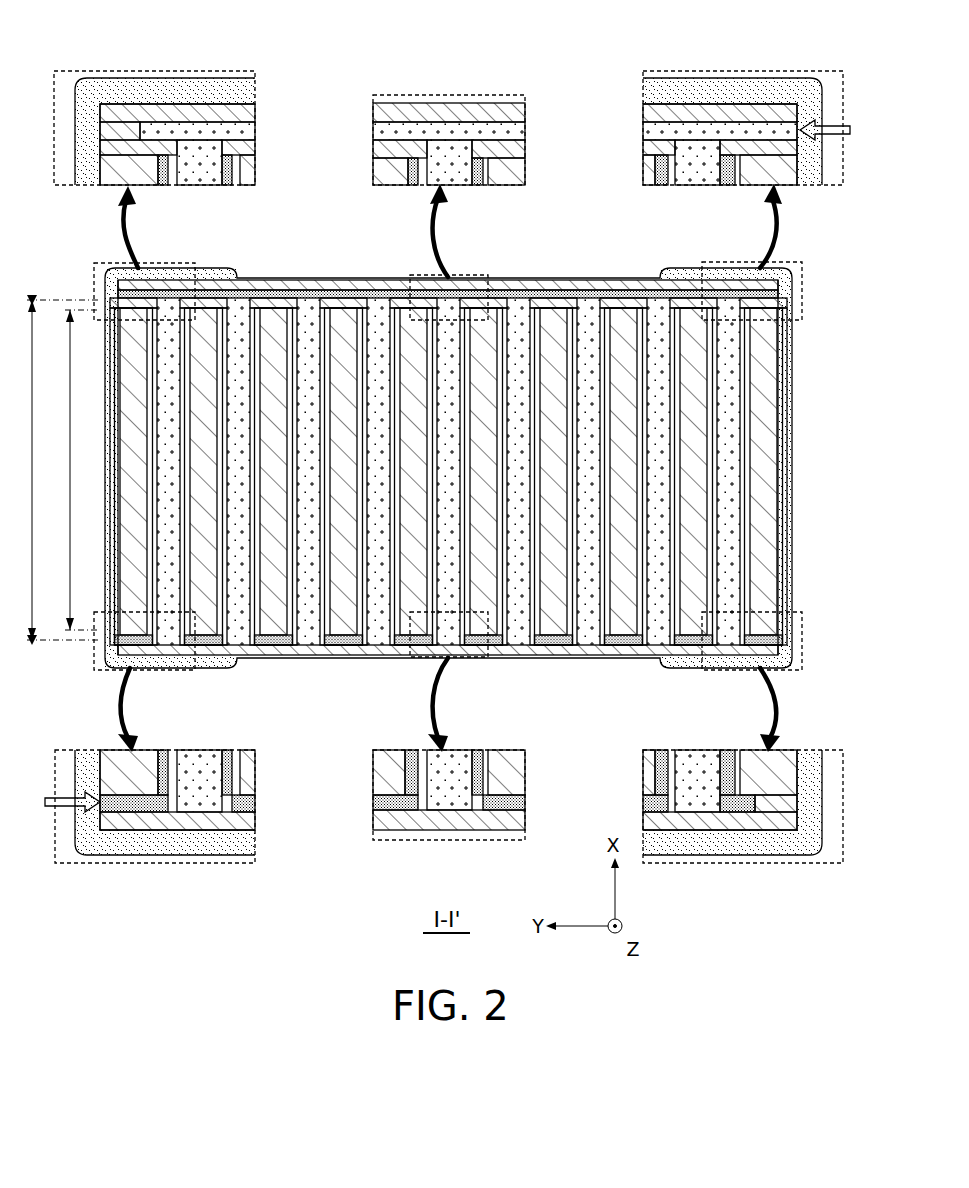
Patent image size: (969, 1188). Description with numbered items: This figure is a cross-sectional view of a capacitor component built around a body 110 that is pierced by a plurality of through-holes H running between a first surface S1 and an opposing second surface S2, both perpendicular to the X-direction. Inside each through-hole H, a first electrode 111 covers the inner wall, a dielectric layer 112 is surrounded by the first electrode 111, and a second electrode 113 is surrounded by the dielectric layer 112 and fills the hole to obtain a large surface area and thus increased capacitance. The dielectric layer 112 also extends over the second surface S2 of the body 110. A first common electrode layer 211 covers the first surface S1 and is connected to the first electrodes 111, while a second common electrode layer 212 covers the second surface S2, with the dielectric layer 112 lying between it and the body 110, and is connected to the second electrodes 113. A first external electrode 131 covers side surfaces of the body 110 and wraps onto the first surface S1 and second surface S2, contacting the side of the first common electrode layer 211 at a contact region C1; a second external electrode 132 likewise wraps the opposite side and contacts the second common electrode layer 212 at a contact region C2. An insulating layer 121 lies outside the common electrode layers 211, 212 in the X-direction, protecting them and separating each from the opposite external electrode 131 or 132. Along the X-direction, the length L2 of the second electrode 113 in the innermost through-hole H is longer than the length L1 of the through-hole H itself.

The body 110 is at (768, 515).
The first electrode 111 is at (752, 565).
The dielectric layer 112 is at (752, 437).
The second electrode 113 is at (752, 478).
The insulating layer 121 is at (208, 108).
The first external electrode 131 is at (114, 88).
The second external electrode 132 is at (808, 92).
The first common electrode layer 211 is at (686, 655).
The second common electrode layer 212 is at (688, 128).
The through-hole H is at (603, 617).
The first surface S1 is at (621, 640).
The second surface S2 is at (622, 305).
The contact region C1 is at (57, 803).
The contact region C2 is at (842, 131).
The length of the through-hole L1 is at (79, 470).
The length of the second electrode L2 is at (61, 470).